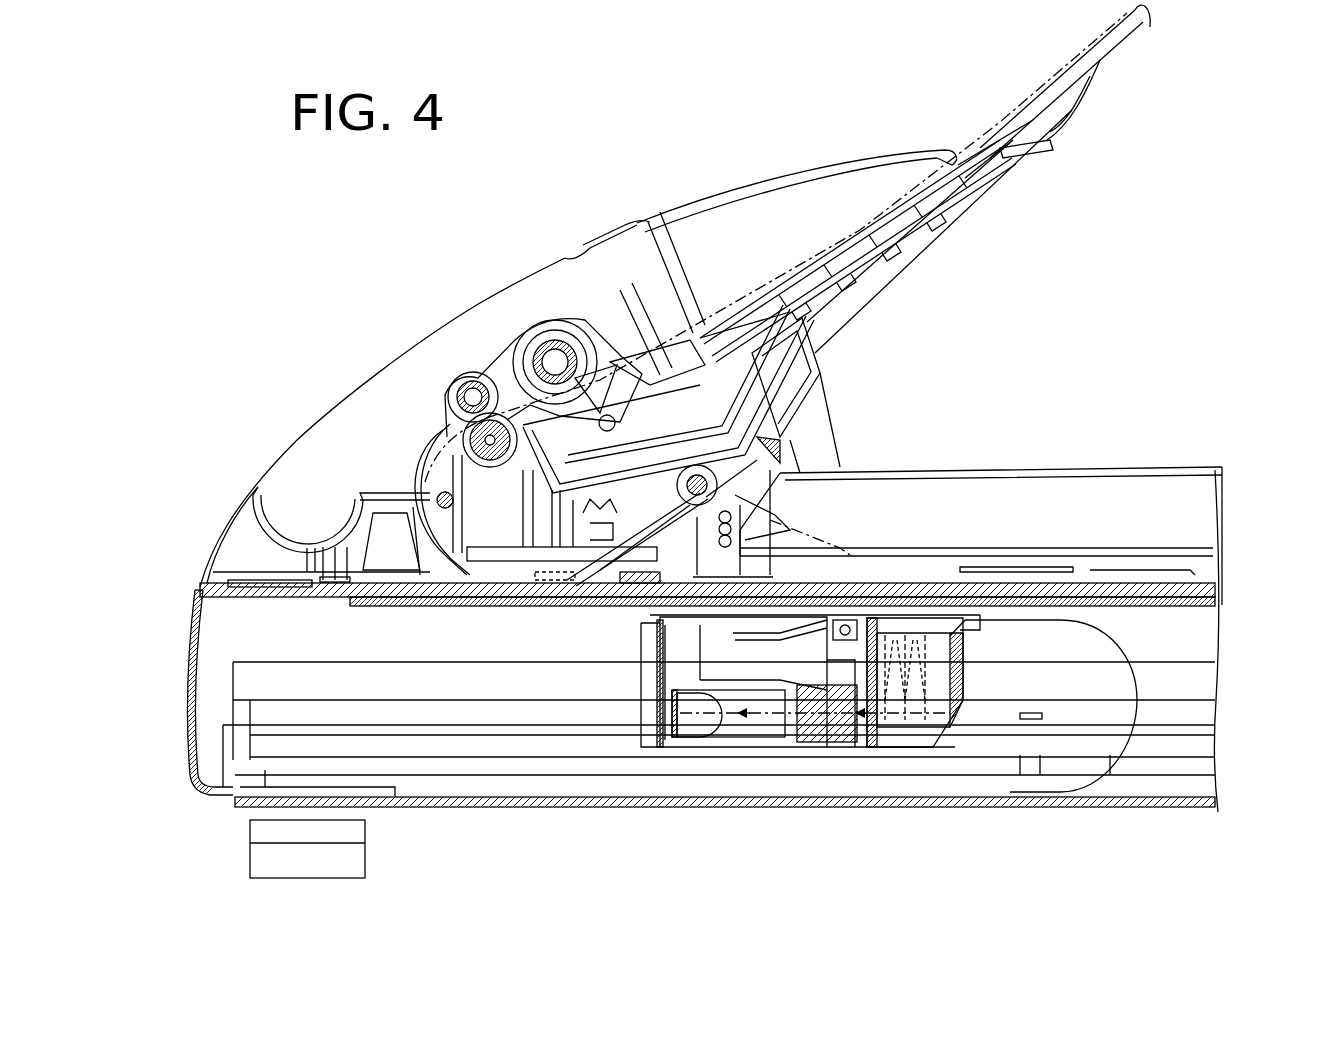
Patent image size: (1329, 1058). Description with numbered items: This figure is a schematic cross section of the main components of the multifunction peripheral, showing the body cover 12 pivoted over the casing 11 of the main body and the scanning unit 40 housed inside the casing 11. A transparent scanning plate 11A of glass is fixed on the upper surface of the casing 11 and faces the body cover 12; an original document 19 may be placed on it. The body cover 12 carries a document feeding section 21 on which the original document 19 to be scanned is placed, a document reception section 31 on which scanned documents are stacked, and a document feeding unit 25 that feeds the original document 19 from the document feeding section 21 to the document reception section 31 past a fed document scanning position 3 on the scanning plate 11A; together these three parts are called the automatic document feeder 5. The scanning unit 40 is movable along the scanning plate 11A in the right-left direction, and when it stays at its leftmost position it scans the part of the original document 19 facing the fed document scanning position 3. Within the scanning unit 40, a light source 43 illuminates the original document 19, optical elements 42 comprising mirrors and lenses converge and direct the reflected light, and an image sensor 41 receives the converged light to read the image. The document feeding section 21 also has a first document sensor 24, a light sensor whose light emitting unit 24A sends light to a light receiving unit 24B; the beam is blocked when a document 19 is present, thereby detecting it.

The fed document scanning position 3 is at (548, 600).
The automatic document feeder 5 is at (573, 212).
The casing 11 is at (190, 667).
The scanning plate 11A is at (1213, 598).
The body cover 12 is at (398, 355).
The original document 19 is at (1077, 65).
The document feeding section 21 is at (950, 148).
The first document sensor 24 is at (730, 267).
The light emitting unit 24A is at (663, 327).
The light receiving unit 24B is at (697, 333).
The document feeding unit 25 is at (447, 423).
The document reception section 31 is at (1047, 545).
The scanning unit 40 is at (810, 684).
The image sensor 41 is at (680, 720).
The optical elements 42 is at (905, 735).
The light source 43 is at (845, 628).